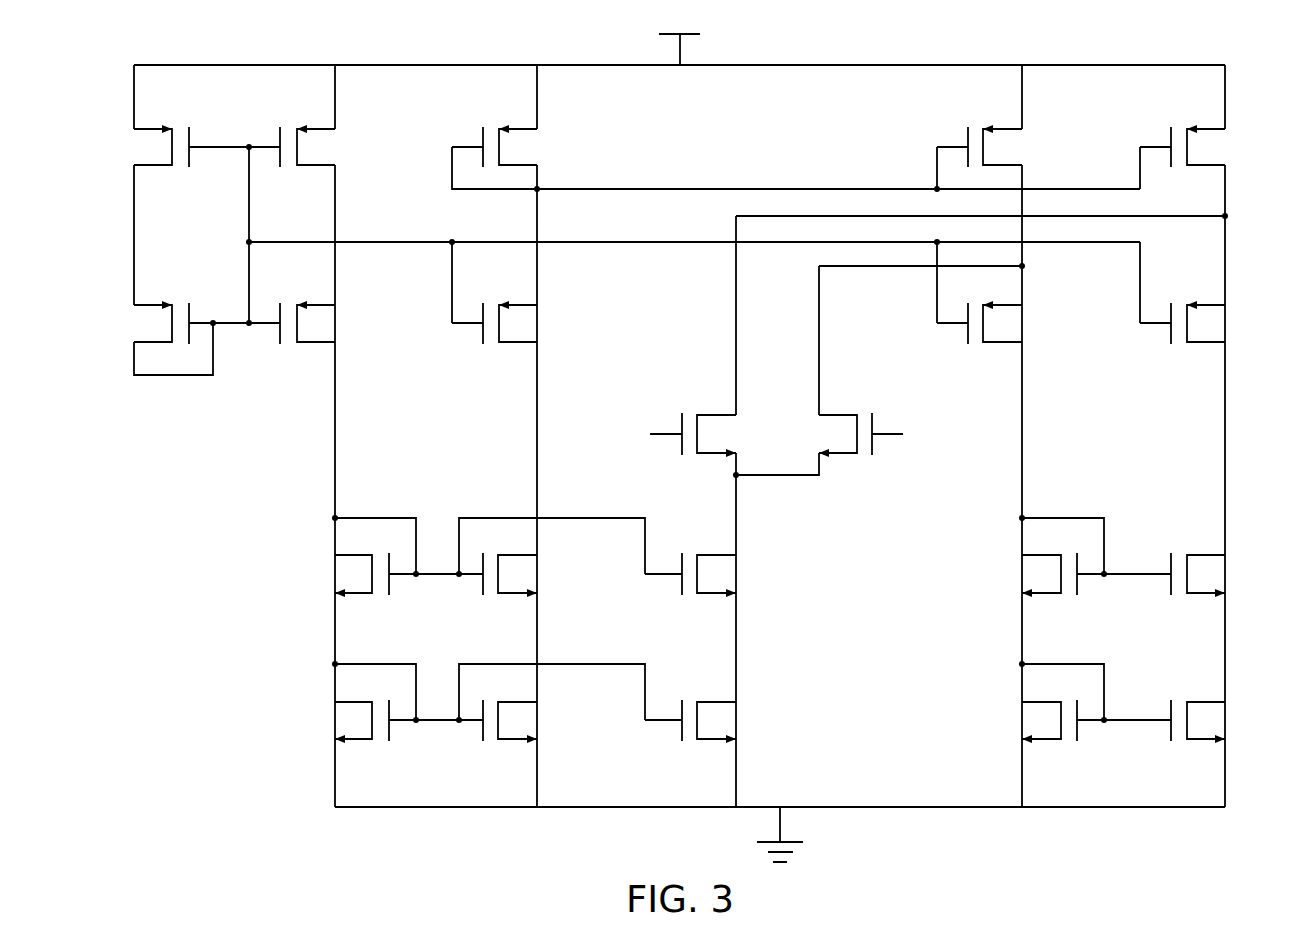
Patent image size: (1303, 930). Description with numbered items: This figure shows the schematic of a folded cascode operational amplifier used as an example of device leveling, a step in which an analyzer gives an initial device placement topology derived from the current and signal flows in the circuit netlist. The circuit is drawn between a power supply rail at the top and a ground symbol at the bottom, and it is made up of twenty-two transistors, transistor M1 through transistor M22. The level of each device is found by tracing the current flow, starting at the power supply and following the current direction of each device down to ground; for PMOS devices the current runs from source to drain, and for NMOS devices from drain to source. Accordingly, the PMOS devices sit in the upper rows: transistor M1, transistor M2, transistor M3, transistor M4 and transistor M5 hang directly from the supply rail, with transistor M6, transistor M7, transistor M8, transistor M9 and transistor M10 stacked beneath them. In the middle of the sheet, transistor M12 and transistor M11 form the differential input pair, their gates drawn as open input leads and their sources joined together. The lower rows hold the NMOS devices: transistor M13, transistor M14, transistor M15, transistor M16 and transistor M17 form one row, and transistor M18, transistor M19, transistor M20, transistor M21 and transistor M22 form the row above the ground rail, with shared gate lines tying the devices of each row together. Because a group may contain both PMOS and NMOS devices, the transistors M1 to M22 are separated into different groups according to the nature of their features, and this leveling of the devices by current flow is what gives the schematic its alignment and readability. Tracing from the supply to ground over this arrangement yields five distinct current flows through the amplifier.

The transistor M1 is at (191, 133).
The transistor M2 is at (316, 146).
The transistor M3 is at (519, 146).
The transistor M4 is at (1002, 146).
The transistor M5 is at (1204, 146).
The transistor M6 is at (191, 305).
The transistor M7 is at (316, 322).
The transistor M8 is at (522, 322).
The transistor M9 is at (1002, 322).
The transistor M10 is at (1182, 342).
The transistor M11 is at (861, 416).
The transistor M12 is at (693, 416).
The transistor M13 is at (370, 575).
The transistor M14 is at (525, 575).
The transistor M15 is at (726, 575).
The transistor M16 is at (1069, 575).
The transistor M17 is at (1195, 557).
The transistor M18 is at (370, 721).
The transistor M19 is at (525, 721).
The transistor M20 is at (728, 721).
The transistor M21 is at (1072, 721).
The transistor M22 is at (1196, 704).